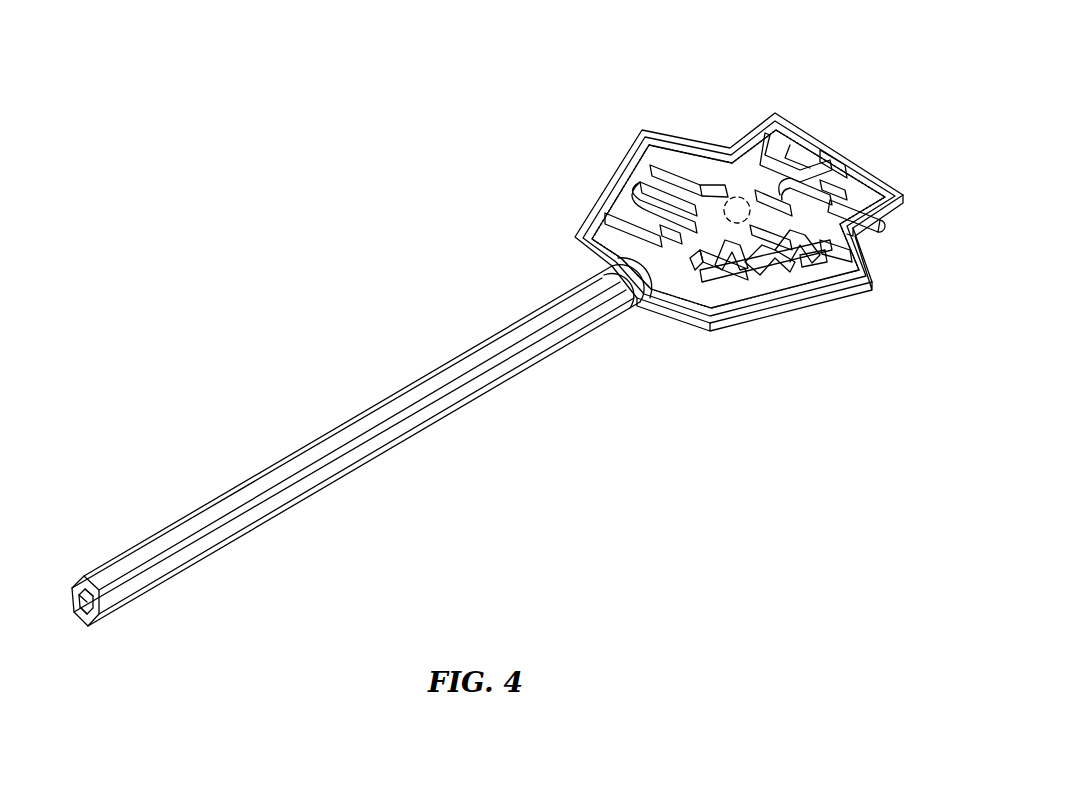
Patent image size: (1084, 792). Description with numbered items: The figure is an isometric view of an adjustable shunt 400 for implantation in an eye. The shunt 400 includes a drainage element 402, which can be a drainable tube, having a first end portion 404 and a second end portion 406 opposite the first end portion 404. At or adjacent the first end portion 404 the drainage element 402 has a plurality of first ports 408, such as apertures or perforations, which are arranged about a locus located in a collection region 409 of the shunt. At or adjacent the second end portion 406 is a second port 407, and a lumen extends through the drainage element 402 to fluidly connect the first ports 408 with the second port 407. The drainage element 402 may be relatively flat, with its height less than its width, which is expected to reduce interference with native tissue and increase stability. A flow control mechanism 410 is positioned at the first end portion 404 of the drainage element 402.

The adjustable shunt 400 is at (556, 64).
The drainage element 402 is at (538, 368).
The first end portion 404 is at (862, 318).
The second end portion 406 is at (503, 424).
The second port 407 is at (80, 608).
The first ports 408 is at (640, 170).
The collection region 409 is at (739, 196).
The flow control mechanism 410 is at (647, 104).